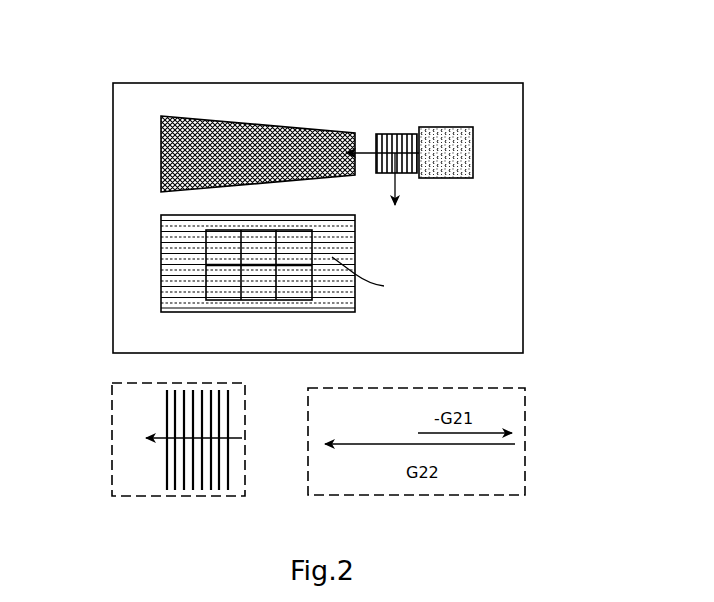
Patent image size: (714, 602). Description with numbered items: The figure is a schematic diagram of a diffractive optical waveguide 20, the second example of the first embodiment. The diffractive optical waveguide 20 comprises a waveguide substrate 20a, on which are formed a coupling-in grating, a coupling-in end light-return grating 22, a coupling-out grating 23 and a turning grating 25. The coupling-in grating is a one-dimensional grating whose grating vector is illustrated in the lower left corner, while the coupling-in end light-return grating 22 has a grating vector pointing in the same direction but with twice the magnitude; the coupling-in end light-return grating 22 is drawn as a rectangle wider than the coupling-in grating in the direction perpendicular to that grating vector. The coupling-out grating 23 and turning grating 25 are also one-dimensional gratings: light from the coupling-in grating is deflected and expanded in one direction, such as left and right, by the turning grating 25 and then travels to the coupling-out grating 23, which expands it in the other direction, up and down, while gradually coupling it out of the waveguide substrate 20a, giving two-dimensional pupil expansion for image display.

The diffractive optical waveguide 20 is at (320, 68).
The waveguide substrate 20a is at (523, 233).
The coupling-in end light-return grating 22 is at (473, 152).
The coupling-out grating 23 is at (160, 266).
The turning grating 25 is at (160, 152).